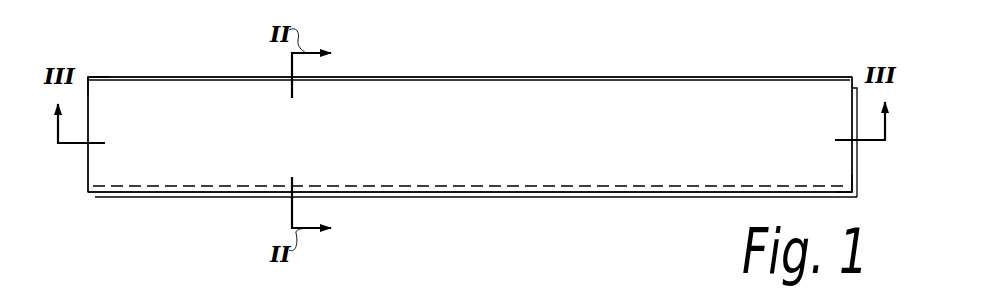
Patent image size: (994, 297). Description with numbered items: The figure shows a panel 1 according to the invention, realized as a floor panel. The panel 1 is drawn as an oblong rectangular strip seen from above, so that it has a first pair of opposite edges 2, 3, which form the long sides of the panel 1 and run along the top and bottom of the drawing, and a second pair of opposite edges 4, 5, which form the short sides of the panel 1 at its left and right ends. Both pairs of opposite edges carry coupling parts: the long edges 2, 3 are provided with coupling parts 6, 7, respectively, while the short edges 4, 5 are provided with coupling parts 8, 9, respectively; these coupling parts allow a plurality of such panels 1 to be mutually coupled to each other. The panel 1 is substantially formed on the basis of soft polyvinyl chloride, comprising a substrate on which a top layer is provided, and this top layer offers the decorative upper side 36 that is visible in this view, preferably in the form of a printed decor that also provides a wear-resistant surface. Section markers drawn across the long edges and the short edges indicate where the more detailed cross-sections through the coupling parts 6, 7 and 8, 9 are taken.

The panel 1 is at (172, 222).
The first edge 2 is at (437, 67).
The second edge 3 is at (428, 210).
The third edge 4 is at (72, 152).
The fourth edge 5 is at (868, 172).
The coupling part 6 is at (628, 78).
The coupling part 7 is at (567, 198).
The coupling part 8 is at (88, 112).
The coupling part 9 is at (855, 176).
The decorative upper side 36 is at (700, 127).